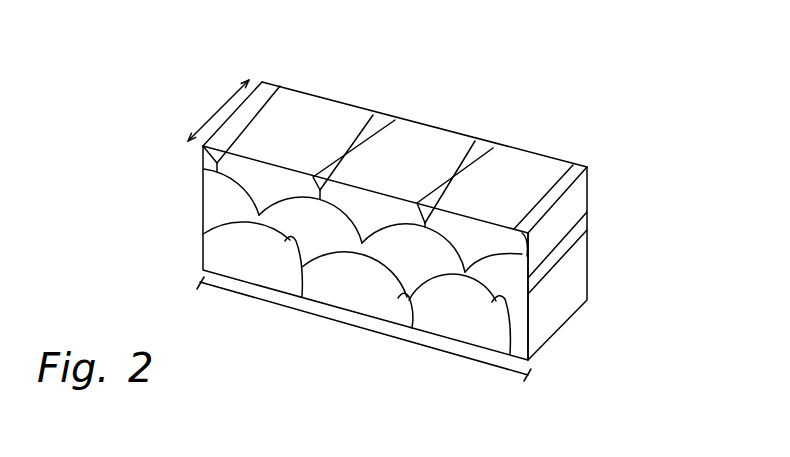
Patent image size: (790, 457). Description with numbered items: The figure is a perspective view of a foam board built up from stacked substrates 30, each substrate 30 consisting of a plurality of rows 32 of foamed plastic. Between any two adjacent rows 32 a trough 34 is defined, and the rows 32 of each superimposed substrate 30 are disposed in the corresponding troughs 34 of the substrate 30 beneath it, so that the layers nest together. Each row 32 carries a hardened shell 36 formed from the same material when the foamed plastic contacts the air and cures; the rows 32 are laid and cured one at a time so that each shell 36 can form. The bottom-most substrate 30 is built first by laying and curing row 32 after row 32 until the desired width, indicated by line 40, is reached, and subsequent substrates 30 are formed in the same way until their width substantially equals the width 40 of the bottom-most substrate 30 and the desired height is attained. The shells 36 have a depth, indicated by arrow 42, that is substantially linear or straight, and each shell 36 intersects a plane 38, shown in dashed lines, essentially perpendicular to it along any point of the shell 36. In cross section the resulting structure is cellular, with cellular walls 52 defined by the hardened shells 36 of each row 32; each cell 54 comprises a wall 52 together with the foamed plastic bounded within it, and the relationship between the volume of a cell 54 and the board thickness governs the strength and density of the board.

The substrate 30 is at (205, 163).
The row 32 is at (213, 165).
The trough 34 is at (259, 82).
The hardened shell 36 is at (548, 257).
The plane 38 is at (192, 128).
The width line 40 is at (507, 369).
The depth arrow 42 is at (233, 97).
The cellular wall 52 is at (552, 293).
The cell 54 is at (507, 277).